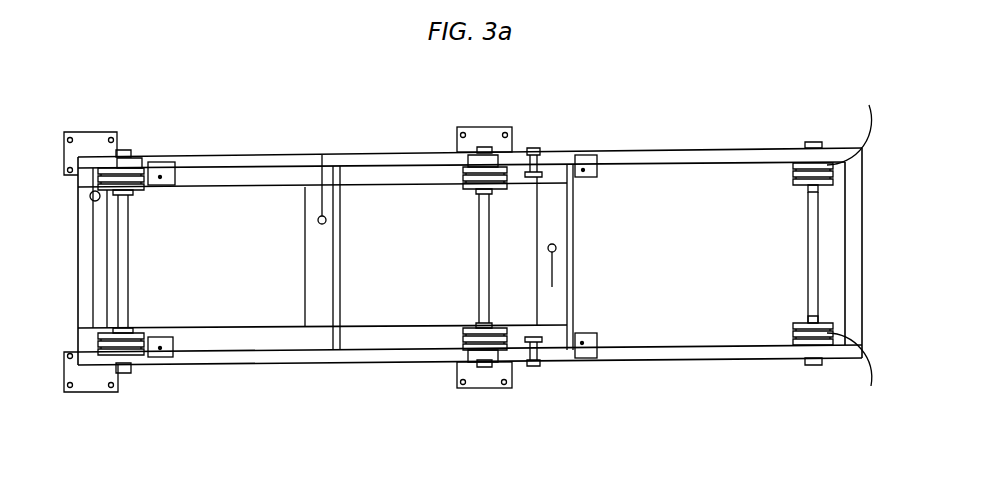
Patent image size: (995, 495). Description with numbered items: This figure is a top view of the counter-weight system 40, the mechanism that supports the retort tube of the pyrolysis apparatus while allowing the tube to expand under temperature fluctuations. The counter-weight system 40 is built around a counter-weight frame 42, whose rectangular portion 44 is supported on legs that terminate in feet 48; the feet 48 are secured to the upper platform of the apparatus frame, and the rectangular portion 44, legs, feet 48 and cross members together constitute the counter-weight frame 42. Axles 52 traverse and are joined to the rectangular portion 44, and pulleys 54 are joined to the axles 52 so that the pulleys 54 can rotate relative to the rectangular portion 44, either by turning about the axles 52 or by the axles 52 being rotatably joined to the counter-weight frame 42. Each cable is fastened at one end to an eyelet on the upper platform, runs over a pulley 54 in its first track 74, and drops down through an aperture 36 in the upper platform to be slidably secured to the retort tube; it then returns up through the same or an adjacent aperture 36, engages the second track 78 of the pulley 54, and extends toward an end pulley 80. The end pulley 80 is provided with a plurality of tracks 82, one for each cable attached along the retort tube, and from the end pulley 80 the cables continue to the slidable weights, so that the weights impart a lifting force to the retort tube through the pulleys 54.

The apertures 36 is at (92, 166).
The counter-weight system 40 is at (702, 392).
The counter-weight frame 42 is at (692, 134).
The rectangular portion 44 is at (68, 427).
The feet 48 is at (110, 130).
The axles 52 is at (128, 238).
The pulleys 54 is at (135, 193).
The first track 74 is at (165, 168).
The second track 78 is at (140, 166).
The end pulley 80 is at (793, 172).
The tracks 82 is at (853, 251).